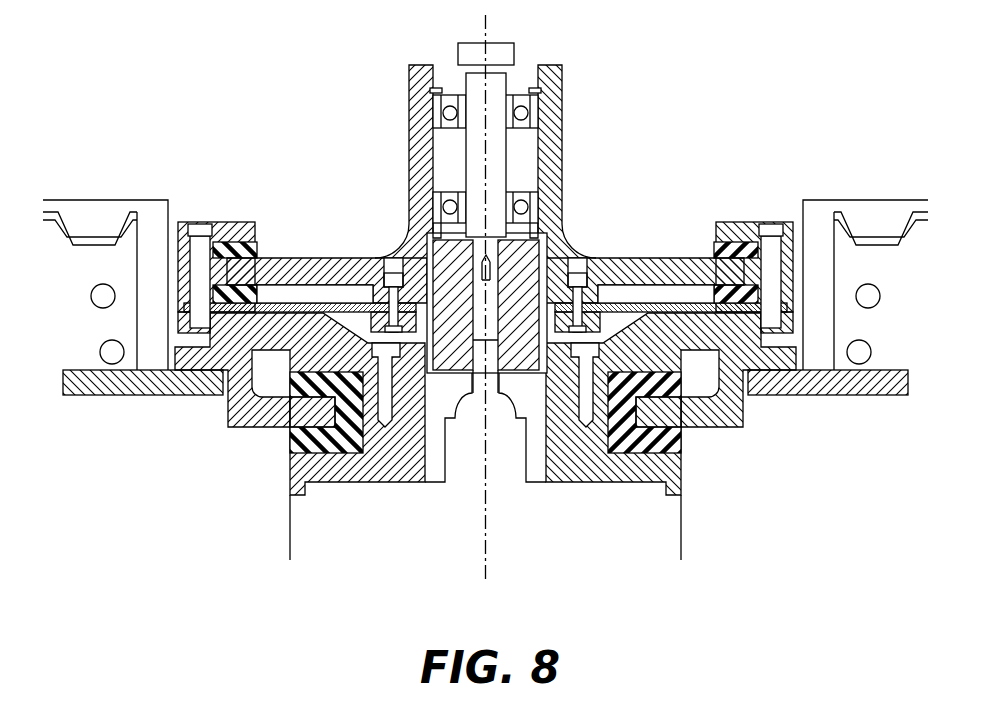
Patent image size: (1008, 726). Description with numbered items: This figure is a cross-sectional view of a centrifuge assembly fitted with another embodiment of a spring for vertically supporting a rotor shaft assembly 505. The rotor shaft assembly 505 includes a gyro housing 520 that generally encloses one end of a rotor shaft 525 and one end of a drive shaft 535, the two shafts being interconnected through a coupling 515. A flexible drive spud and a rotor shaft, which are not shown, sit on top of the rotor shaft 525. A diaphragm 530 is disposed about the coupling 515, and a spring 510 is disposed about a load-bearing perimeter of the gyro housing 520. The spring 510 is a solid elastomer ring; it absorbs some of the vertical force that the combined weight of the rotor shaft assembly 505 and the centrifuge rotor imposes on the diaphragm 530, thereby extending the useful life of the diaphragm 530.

The rotor shaft assembly 505 is at (410, 109).
The spring 510 is at (258, 247).
The coupling 515 is at (445, 253).
The gyro housing 520 is at (553, 116).
The rotor shaft 525 is at (497, 162).
The diaphragm 530 is at (647, 286).
The drive shaft 535 is at (480, 366).